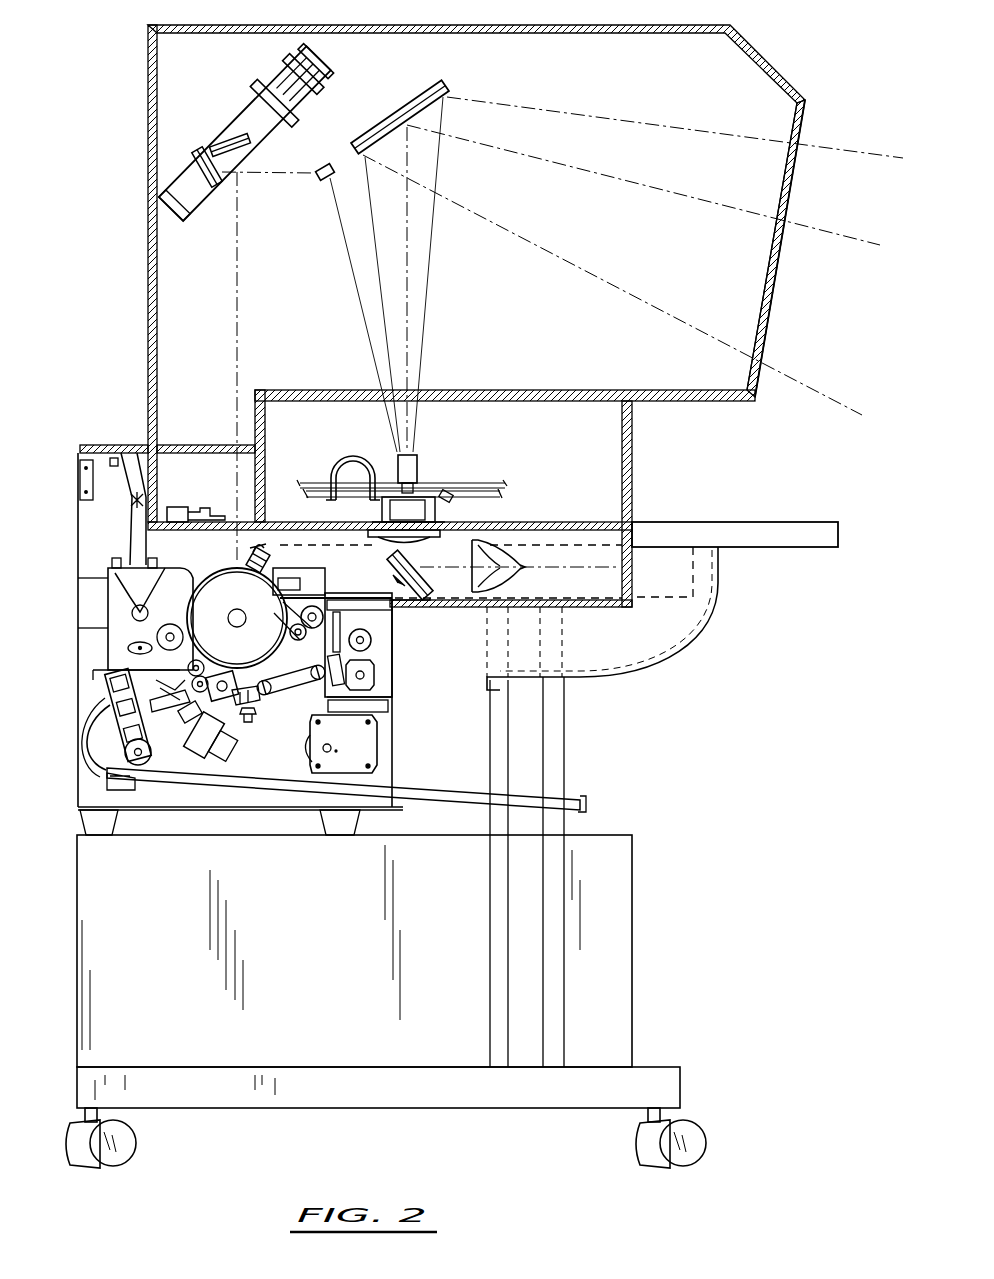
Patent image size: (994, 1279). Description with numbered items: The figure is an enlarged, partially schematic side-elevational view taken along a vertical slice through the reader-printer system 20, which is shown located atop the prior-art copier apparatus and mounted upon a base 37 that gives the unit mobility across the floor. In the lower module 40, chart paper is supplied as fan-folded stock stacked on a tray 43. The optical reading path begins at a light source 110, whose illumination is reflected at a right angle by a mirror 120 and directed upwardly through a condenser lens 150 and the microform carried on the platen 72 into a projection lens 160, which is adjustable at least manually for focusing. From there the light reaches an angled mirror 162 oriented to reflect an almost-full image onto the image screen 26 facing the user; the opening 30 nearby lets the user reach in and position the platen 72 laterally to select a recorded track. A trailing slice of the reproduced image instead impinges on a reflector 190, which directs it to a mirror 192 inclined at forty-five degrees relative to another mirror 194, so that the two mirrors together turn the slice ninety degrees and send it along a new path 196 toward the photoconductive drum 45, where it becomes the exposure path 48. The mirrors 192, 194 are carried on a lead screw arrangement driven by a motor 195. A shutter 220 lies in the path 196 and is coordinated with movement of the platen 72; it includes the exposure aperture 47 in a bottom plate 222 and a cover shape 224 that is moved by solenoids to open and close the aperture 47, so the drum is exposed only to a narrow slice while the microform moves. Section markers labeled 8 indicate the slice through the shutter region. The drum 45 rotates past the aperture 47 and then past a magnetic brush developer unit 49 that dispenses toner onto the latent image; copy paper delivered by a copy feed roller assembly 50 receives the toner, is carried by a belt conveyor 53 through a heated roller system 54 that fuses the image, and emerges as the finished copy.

The reader-printer system 20 is at (138, 294).
The image screen 26 is at (800, 128).
The opening 30 is at (636, 468).
The base 37 is at (636, 958).
The lower module 40 is at (78, 705).
The tray 43 is at (580, 797).
The photoconductive drum 45 is at (202, 580).
The exposure aperture 47 is at (248, 524).
The path 48 is at (236, 560).
The magnetic brush developer unit 49 is at (104, 604).
The copy feed roller assembly 50 is at (170, 772).
The belt conveyor 53 is at (298, 694).
The heated roller system 54 is at (325, 660).
The platen 72 is at (428, 530).
The light source 110 is at (510, 572).
The mirror 120 is at (393, 575).
The condenser lens 150 is at (395, 545).
The projection lens 160 is at (422, 480).
The angled mirror 162 is at (378, 125).
The reflector 190 is at (322, 163).
The mirror 192 is at (210, 148).
The mirror 194 is at (222, 133).
The motor 195 is at (333, 74).
The path 196 is at (238, 277).
The shutter 220 is at (145, 522).
The bottom plate 222 is at (155, 530).
The cover shape 224 is at (219, 512).
The section indicator 8 is at (256, 478).